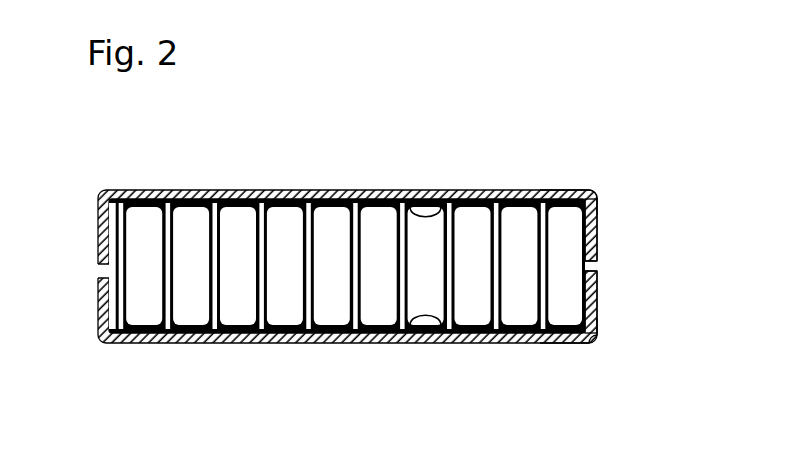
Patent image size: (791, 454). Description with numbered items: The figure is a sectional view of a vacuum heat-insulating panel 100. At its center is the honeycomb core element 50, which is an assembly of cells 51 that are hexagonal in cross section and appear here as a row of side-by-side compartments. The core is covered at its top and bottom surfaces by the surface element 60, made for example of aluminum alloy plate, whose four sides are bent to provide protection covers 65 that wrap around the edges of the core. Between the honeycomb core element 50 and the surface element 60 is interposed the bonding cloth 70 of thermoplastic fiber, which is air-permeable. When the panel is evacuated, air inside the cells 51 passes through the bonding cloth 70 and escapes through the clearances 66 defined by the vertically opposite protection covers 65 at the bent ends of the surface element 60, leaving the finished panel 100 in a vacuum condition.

The vacuum heat-insulating panel 100 is at (490, 148).
The honeycomb core element 50 is at (279, 192).
The cells 51 is at (332, 193).
The surface element 60 is at (564, 189).
The protection covers 65 is at (597, 287).
The clearances 66 is at (590, 262).
The bonding cloth 70 is at (439, 190).